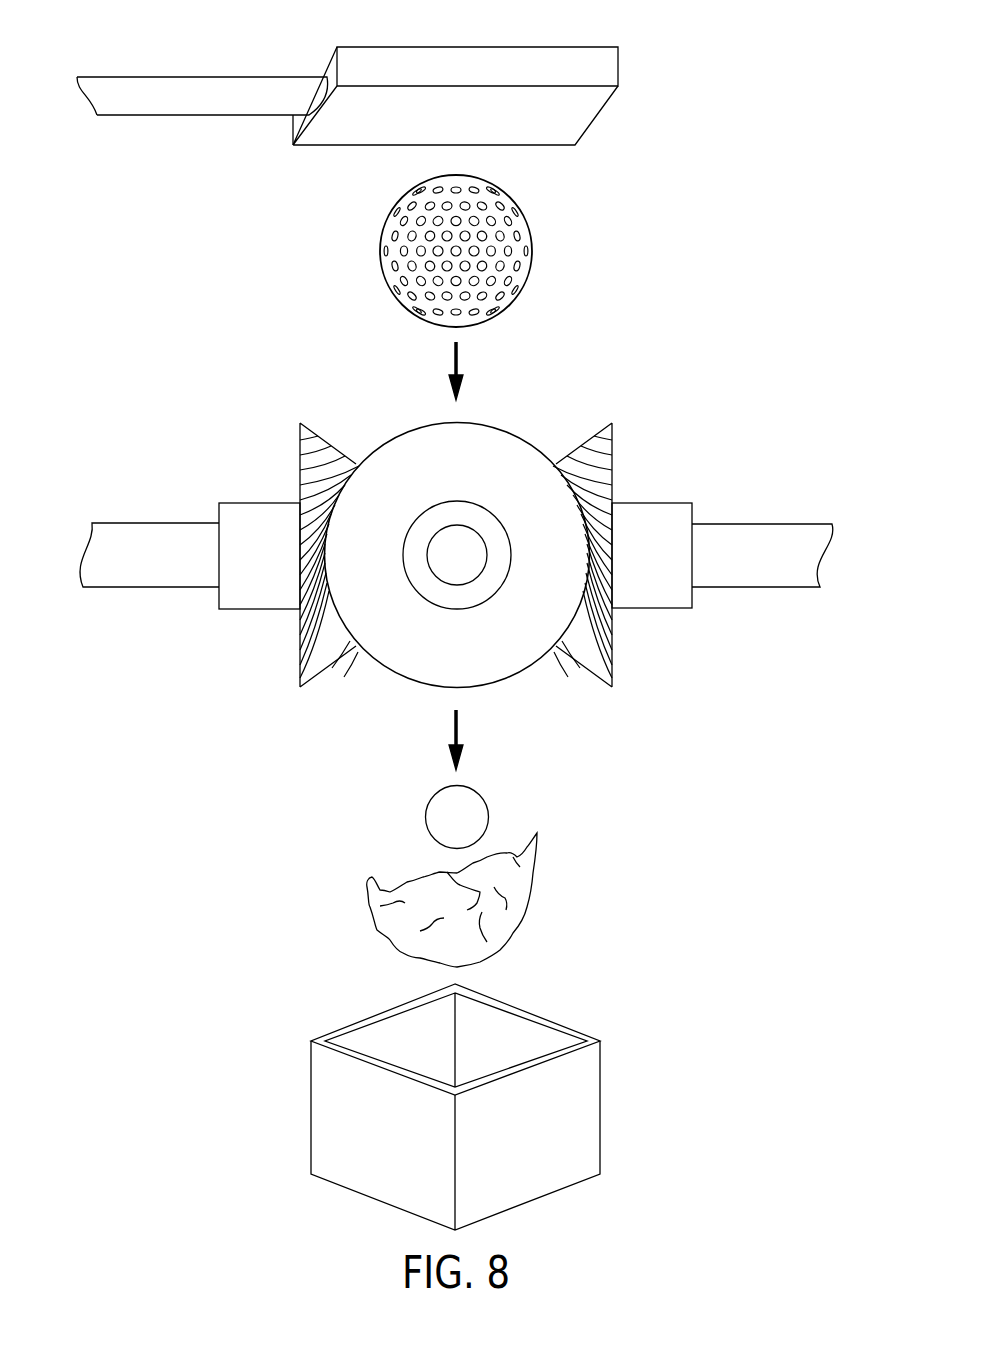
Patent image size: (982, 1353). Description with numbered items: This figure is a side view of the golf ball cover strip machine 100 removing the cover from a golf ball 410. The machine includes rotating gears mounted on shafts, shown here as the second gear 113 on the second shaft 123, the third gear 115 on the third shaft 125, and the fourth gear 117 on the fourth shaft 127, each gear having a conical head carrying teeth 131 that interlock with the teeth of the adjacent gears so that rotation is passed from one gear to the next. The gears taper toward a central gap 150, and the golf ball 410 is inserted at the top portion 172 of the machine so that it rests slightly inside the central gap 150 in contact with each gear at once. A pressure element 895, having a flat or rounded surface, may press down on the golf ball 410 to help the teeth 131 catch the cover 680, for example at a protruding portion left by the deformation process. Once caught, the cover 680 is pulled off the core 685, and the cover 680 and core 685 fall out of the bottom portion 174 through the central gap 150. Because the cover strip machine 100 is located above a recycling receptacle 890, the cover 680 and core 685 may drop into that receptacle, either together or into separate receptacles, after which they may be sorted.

The golf ball cover strip machine 100 is at (312, 298).
The second gear 113 is at (614, 447).
The third gear 115 is at (430, 422).
The fourth gear 117 is at (300, 432).
The second shaft 123 is at (678, 502).
The third shaft 125 is at (450, 609).
The fourth shaft 127 is at (245, 502).
The teeth 131 is at (598, 615).
The central gap 150 is at (350, 400).
The top portion 172 is at (581, 385).
The bottom portion 174 is at (360, 697).
The golf ball 410 is at (513, 250).
The cover 680 is at (512, 922).
The core 685 is at (437, 818).
The recycling receptacle 890 is at (575, 1113).
The pressure element 895 is at (460, 57).